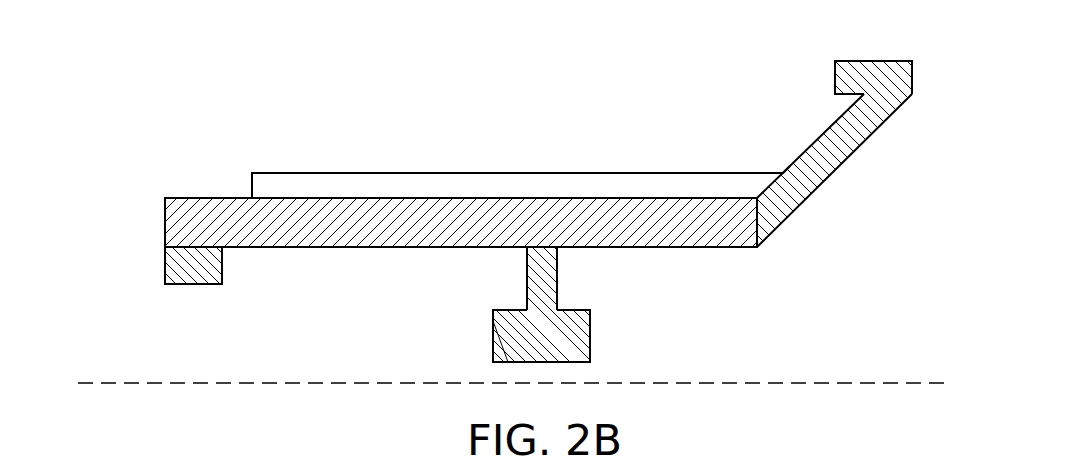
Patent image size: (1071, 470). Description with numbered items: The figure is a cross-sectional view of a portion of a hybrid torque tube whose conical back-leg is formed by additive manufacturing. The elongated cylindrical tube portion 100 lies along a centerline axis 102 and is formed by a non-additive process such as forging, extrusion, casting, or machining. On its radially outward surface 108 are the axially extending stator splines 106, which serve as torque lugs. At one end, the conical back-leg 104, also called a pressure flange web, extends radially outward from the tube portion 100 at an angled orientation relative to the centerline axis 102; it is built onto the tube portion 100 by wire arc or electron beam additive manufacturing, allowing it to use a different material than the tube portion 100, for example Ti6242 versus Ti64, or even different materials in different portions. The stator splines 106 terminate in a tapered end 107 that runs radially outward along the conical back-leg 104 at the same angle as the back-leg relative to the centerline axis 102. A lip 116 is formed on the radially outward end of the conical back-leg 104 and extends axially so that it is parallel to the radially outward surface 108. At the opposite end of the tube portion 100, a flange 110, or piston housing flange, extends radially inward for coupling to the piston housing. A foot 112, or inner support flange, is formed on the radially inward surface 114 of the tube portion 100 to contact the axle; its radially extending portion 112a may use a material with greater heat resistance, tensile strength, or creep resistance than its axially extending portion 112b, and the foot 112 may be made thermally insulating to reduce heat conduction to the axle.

The tube portion 100 is at (388, 235).
The centerline axis 102 is at (118, 382).
The conical back-leg 104 is at (833, 162).
The stator splines 106 is at (315, 182).
The end of stator splines 107 is at (777, 173).
The radially outward surface 108 is at (215, 198).
The flange 110 is at (182, 280).
The foot 112 is at (540, 358).
The radially extending portion 112a is at (550, 273).
The axially extending portion 112b is at (582, 335).
The radially inward surface 114 is at (280, 249).
The lip 116 is at (850, 72).